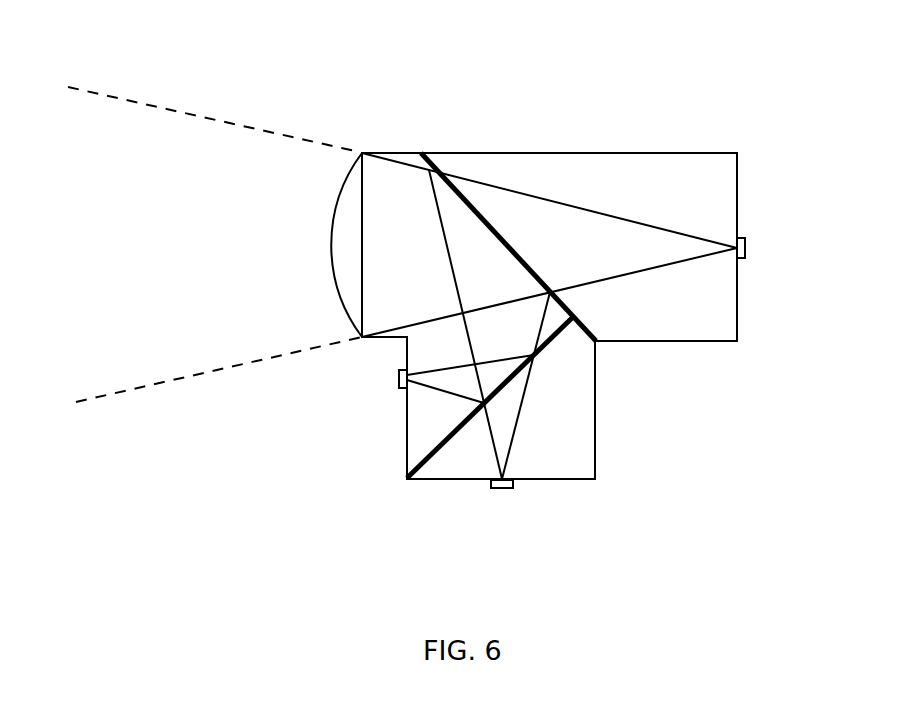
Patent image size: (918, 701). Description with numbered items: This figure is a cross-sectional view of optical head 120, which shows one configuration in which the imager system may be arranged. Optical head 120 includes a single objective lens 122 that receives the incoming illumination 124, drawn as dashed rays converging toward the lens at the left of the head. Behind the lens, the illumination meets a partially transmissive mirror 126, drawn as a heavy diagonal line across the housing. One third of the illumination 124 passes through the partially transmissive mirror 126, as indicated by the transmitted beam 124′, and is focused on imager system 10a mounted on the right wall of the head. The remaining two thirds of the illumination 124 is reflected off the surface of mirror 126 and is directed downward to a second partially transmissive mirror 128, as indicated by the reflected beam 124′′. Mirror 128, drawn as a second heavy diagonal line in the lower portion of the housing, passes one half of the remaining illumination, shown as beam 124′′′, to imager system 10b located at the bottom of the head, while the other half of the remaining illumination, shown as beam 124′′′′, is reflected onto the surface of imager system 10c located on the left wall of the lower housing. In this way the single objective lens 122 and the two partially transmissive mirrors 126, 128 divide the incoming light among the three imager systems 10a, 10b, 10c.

The optical head 120 is at (418, 37).
The objective lens 122 is at (358, 153).
The incoming illumination 124 is at (175, 234).
The illumination passing through mirror 124′ is at (620, 255).
The illumination reflected to mirror 124′′ is at (522, 296).
The illumination passed to imager system 10b 124′′′ is at (502, 421).
The illumination reflected to imager system 10c 124′′′′ is at (438, 378).
The partially transmissive mirror 126 is at (465, 199).
The partially transmissive mirror 128 is at (435, 479).
The imager system 10a is at (752, 258).
The imager system 10b is at (520, 492).
The imager system 10c is at (388, 386).